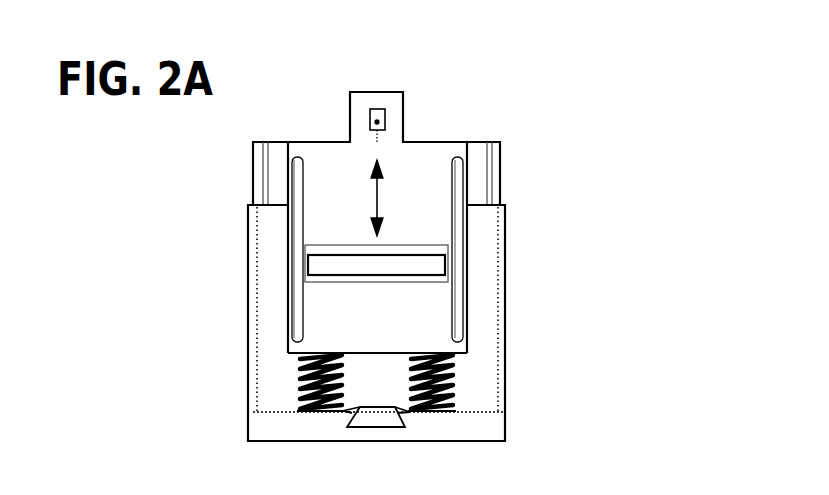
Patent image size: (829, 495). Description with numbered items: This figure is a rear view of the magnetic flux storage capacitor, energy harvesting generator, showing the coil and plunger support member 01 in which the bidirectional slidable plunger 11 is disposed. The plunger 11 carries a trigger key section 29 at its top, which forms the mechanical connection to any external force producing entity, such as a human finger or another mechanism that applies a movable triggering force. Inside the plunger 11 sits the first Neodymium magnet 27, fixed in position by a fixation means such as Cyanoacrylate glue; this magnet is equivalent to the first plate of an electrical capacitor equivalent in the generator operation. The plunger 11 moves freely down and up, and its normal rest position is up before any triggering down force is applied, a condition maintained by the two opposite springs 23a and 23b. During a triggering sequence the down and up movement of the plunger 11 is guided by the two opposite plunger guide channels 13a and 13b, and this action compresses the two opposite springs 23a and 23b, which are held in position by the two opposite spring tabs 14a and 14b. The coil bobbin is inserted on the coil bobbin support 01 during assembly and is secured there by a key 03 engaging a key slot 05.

The coil and plunger support member 01 is at (493, 362).
The key 03 is at (373, 421).
The key slot 05 is at (408, 425).
The plunger 11 is at (428, 143).
The plunger guide channel 13a is at (500, 257).
The plunger guide channel 13b is at (253, 225).
The spring tab 14a is at (453, 406).
The spring tab 14b is at (302, 402).
The spring 23a is at (457, 388).
The spring 23b is at (300, 378).
The first Neodymium magnet 27 is at (340, 267).
The trigger key section 29 is at (373, 92).